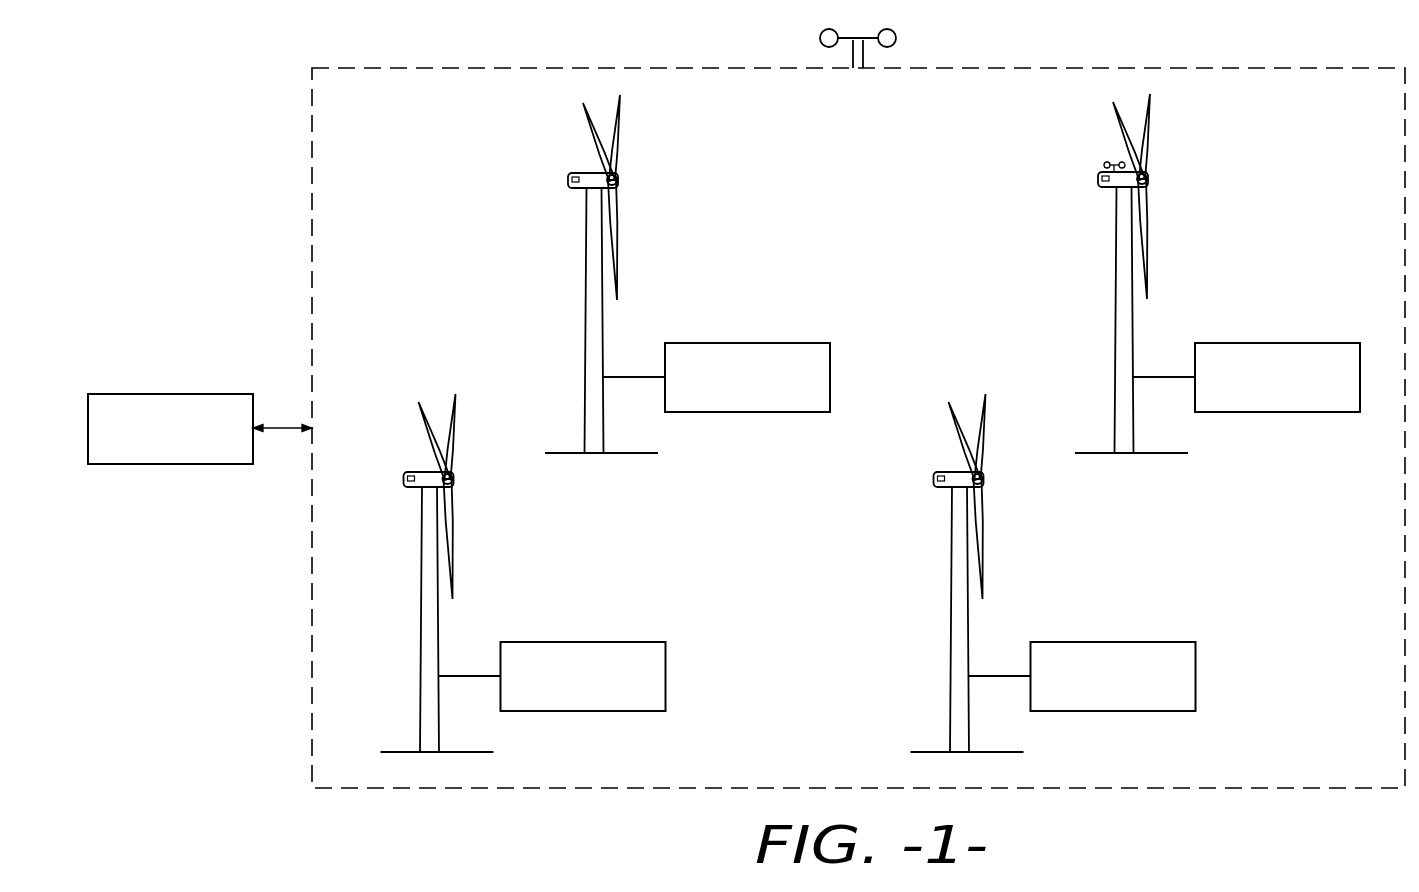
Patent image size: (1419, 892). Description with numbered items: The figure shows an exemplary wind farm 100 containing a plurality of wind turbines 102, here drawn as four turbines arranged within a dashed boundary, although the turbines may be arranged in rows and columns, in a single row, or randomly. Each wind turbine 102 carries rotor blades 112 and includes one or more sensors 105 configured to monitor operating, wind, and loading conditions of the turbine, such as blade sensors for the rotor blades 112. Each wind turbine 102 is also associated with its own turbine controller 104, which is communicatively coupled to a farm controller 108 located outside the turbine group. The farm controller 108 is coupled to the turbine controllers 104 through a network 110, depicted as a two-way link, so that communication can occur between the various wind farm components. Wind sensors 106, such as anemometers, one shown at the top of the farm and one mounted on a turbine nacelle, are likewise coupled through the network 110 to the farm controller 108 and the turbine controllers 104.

The wind farm 100 is at (213, 124).
The wind turbine 102 is at (775, 436).
The turbine controller 104 is at (913, 502).
The sensor 105 is at (741, 355).
The wind sensor 106 is at (820, 38).
The farm controller 108 is at (150, 394).
The network 110 is at (277, 424).
The rotor blade 112 is at (831, 346).